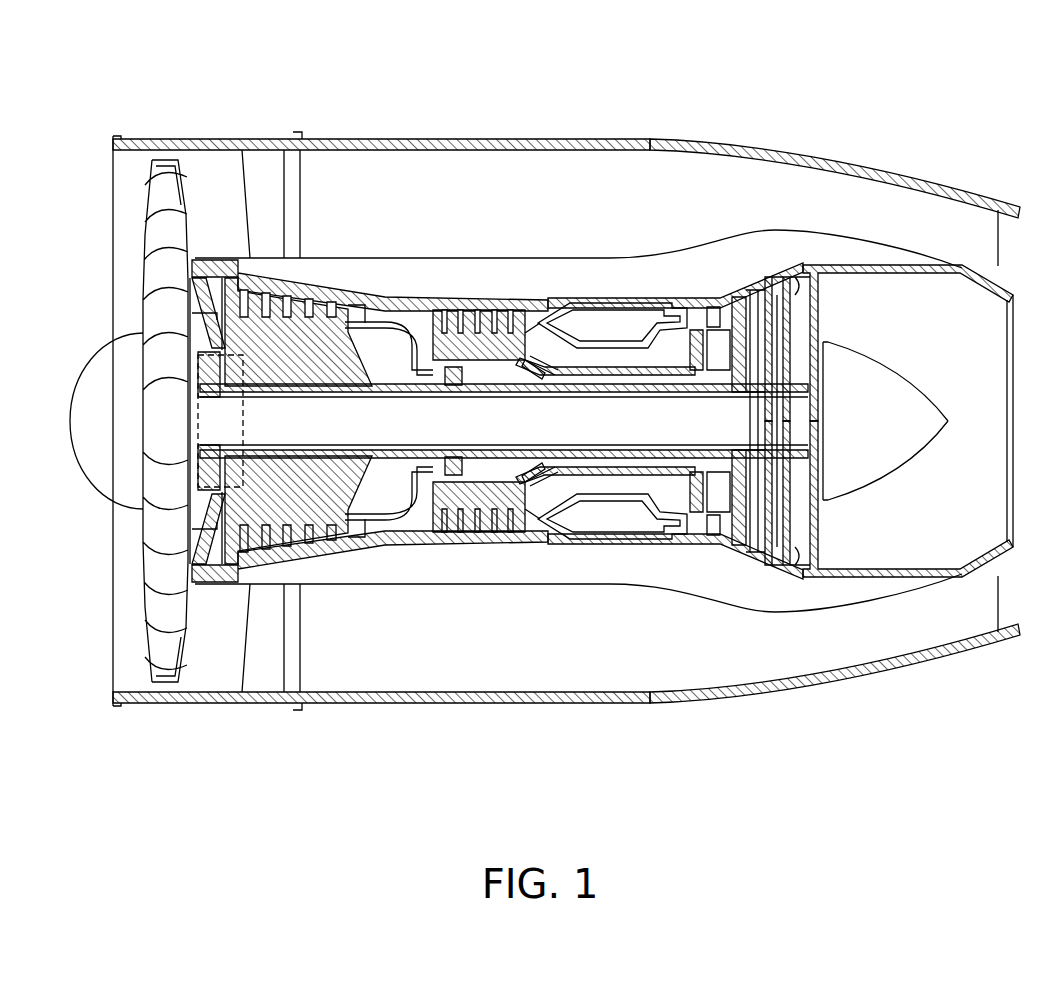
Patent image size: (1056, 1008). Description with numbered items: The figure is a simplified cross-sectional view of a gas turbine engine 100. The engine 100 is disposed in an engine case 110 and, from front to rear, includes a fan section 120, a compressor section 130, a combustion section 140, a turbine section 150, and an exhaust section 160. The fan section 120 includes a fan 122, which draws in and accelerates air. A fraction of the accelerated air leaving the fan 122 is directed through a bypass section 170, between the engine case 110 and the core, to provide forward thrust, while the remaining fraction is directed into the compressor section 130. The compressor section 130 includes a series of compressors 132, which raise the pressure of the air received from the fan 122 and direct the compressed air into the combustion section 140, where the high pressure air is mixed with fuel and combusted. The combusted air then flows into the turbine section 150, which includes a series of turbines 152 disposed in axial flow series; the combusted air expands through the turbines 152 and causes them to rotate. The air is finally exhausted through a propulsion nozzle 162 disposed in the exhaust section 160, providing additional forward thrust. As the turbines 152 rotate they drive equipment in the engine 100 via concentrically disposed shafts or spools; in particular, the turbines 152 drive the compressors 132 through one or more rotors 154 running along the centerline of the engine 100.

The gas turbine engine 100 is at (533, 418).
The engine case 110 is at (366, 140).
The fan section 120 is at (122, 484).
The fan 122 is at (150, 266).
The compressor section 130 is at (369, 534).
The compressors 132 is at (320, 372).
The combustion section 140 is at (650, 738).
The turbine section 150 is at (736, 543).
The turbines 152 is at (770, 477).
The rotors 154 is at (400, 397).
The exhaust section 160 is at (957, 738).
The propulsion nozzle 162 is at (921, 212).
The bypass section 170 is at (506, 184).